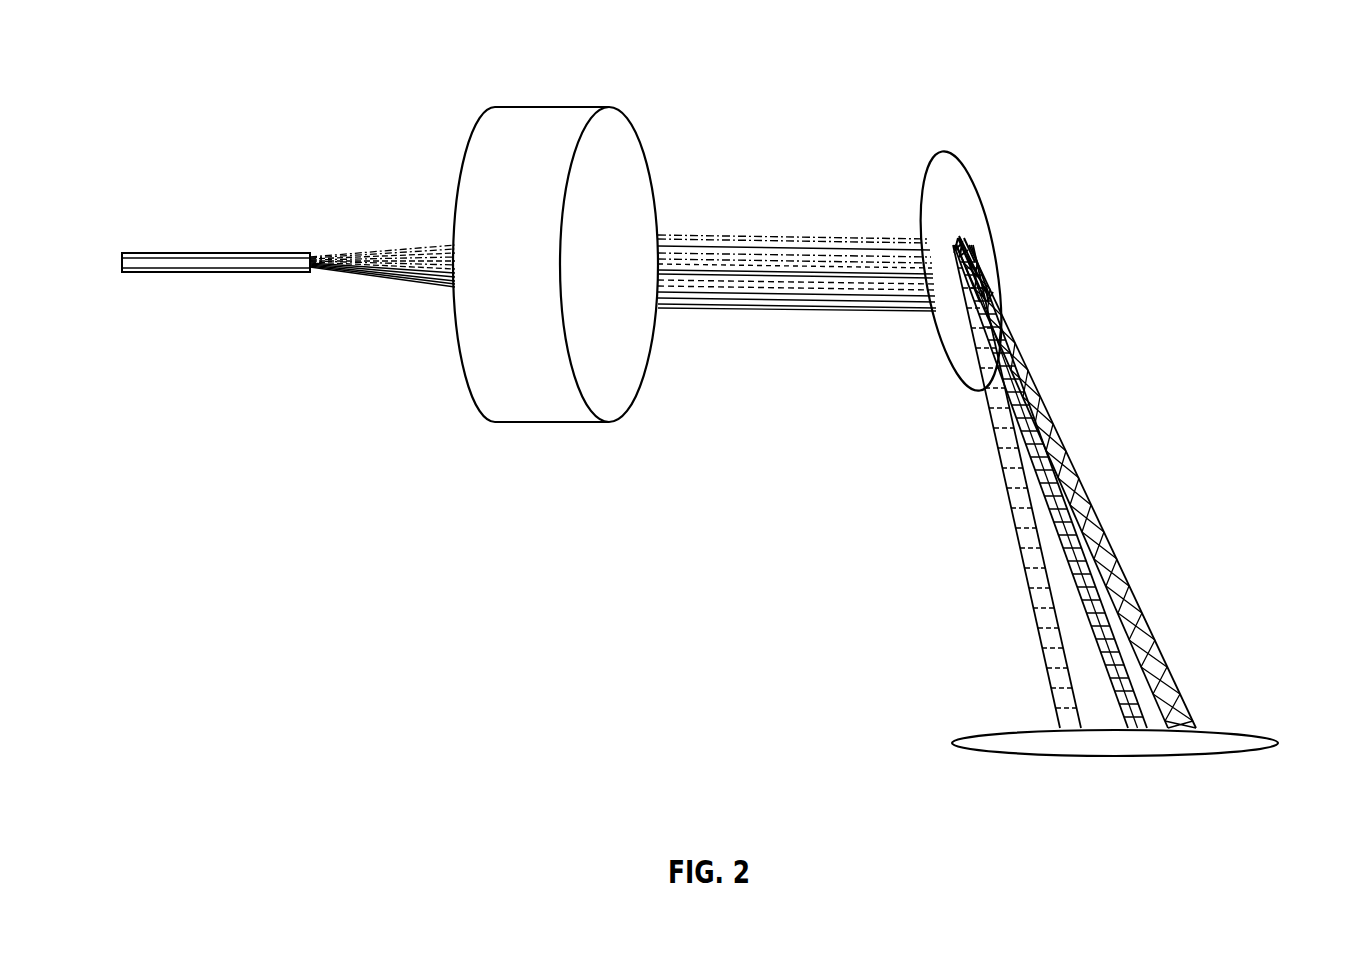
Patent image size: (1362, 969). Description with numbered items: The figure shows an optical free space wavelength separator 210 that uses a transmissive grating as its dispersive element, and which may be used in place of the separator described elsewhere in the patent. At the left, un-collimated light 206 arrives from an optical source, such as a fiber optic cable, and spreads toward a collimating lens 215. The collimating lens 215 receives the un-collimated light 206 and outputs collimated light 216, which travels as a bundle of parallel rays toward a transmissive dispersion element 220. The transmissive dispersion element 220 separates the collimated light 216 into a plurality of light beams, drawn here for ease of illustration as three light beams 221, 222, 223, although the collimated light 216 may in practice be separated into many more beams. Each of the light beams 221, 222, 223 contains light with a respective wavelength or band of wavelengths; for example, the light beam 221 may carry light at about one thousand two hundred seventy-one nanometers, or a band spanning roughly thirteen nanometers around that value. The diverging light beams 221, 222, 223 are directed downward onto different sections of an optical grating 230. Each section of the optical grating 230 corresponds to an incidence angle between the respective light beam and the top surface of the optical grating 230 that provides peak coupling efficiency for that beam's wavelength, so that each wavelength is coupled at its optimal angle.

The optical free space wavelength separator 210 is at (1241, 48).
The un-collimated light 206 is at (152, 252).
The collimating lens 215 is at (550, 106).
The collimated light 216 is at (779, 238).
The transmissive dispersion element 220 is at (975, 188).
The light beam 221 is at (1030, 600).
The light beam 222 is at (1143, 668).
The light beam 223 is at (1148, 622).
The optical grating 230 is at (1227, 757).